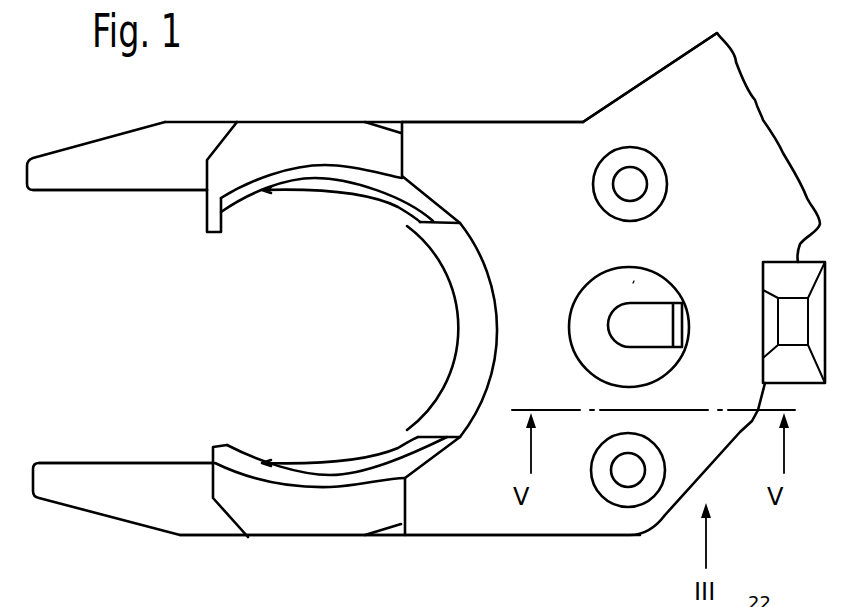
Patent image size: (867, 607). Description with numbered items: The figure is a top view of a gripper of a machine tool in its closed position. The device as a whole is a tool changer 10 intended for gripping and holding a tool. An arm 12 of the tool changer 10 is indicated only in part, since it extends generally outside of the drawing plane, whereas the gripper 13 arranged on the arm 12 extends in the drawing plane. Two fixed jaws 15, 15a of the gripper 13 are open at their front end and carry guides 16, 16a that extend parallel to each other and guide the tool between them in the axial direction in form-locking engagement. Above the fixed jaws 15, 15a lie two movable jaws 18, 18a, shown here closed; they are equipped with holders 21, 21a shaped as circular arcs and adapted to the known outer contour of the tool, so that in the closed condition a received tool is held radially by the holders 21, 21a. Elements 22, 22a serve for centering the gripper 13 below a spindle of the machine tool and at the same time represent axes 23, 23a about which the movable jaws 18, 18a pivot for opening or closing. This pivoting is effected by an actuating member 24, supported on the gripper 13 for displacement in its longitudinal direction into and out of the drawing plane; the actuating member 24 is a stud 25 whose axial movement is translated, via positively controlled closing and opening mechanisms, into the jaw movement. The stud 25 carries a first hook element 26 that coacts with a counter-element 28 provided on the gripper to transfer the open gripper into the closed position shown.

The tool changer 10 is at (468, 86).
The arm 12 is at (708, 100).
The gripper 13 is at (525, 118).
The fixed jaw 15 is at (118, 172).
The fixed jaw 15a is at (143, 485).
The guide 16 is at (82, 192).
The guide 16a is at (68, 463).
The movable jaw 18 is at (290, 150).
The movable jaw 18a is at (292, 500).
The holder 21 is at (330, 168).
The holder 21a is at (328, 484).
The element 22 is at (628, 180).
The element 22a is at (622, 463).
The axis 23 is at (613, 160).
The axis 23a is at (615, 488).
The actuating member 24 is at (633, 283).
The stud 25 is at (592, 271).
The first hook element 26 is at (642, 323).
The counter-element 28 is at (813, 298).